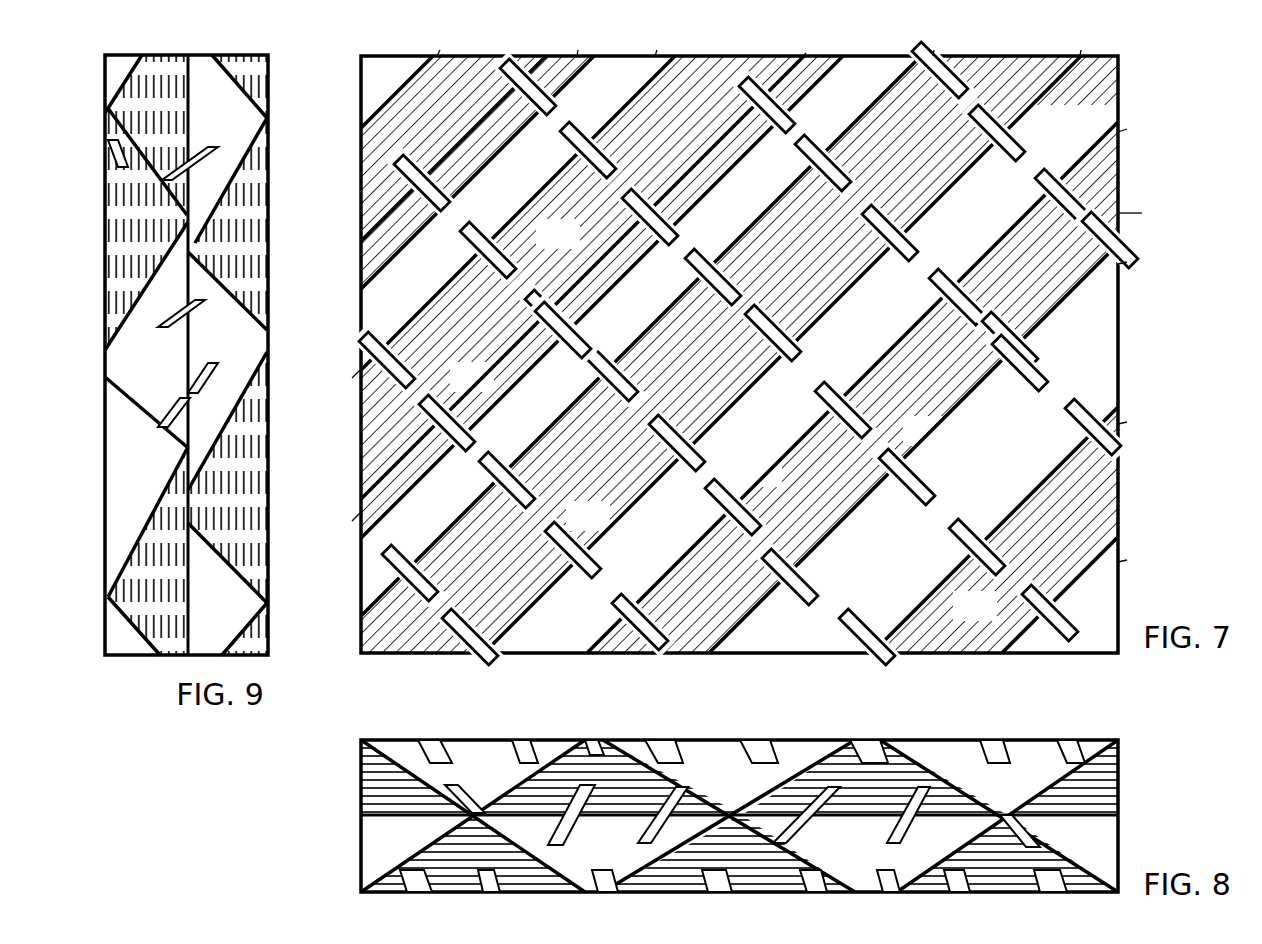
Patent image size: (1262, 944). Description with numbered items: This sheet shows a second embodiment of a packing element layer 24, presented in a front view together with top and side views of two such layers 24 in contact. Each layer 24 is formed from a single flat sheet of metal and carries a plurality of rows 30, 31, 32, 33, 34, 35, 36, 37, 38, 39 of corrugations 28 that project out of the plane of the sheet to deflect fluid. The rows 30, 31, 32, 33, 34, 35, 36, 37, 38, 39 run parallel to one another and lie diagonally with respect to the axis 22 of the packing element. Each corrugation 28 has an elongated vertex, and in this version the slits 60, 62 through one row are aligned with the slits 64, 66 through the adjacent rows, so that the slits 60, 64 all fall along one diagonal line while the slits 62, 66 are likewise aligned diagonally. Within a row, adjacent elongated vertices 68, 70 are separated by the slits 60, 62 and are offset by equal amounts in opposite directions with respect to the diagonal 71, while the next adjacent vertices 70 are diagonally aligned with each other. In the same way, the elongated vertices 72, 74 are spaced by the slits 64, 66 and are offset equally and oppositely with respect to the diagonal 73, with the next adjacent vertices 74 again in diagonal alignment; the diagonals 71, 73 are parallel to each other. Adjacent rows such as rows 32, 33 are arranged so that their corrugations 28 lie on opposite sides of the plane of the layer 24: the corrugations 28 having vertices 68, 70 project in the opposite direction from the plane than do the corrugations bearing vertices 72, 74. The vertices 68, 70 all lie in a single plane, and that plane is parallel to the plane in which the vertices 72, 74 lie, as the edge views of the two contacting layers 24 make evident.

In FIG. 7, the axis 22 is at (741, 20).
In FIG. 7, the layer 24 is at (1142, 213).
In FIG. 8, the layer 24 is at (769, 816).
In FIG. 9, the layer 24 is at (191, 340).
In FIG. 7, the corrugations 28 is at (631, 350).
In FIG. 8, the corrugations 28 is at (739, 816).
In FIG. 9, the corrugations 28 is at (186, 355).
In FIG. 7, the row 30 is at (440, 50).
In FIG. 7, the row 31 is at (578, 50).
In FIG. 7, the row 32 is at (657, 50).
In FIG. 7, the row 33 is at (806, 53).
In FIG. 7, the row 34 is at (934, 50).
In FIG. 7, the row 35 is at (1081, 50).
In FIG. 7, the row 36 is at (1127, 129).
In FIG. 7, the row 37 is at (1127, 262).
In FIG. 7, the row 38 is at (1127, 422).
In FIG. 7, the row 39 is at (1127, 560).
In FIG. 7, the slit 60 is at (761, 222).
In FIG. 8, the slit 60 is at (748, 742).
In FIG. 7, the slit 62 is at (749, 319).
In FIG. 8, the slit 62 is at (645, 742).
In FIG. 9, the slit 62 is at (105, 524).
In FIG. 7, the slit 64 is at (710, 376).
In FIG. 8, the slit 64 is at (768, 827).
In FIG. 9, the slit 64 is at (208, 486).
In FIG. 7, the slit 66 is at (778, 441).
In FIG. 8, the slit 66 is at (733, 856).
In FIG. 9, the slit 66 is at (238, 308).
In FIG. 7, the elongated vertex 68 is at (631, 350).
In FIG. 8, the elongated vertex 68 is at (808, 742).
In FIG. 9, the elongated vertex 68 is at (105, 427).
In FIG. 7, the elongated vertex 70 is at (631, 350).
In FIG. 8, the elongated vertex 70 is at (694, 742).
In FIG. 9, the elongated vertex 70 is at (105, 482).
In FIG. 7, the diagonal 71 is at (352, 378).
In FIG. 7, the elongated vertex 72 is at (516, 387).
In FIG. 8, the elongated vertex 72 is at (742, 810).
In FIG. 9, the elongated vertex 72 is at (215, 406).
In FIG. 7, the diagonal 73 is at (352, 521).
In FIG. 7, the elongated vertex 74 is at (653, 278).
In FIG. 8, the elongated vertex 74 is at (782, 816).
In FIG. 9, the elongated vertex 74 is at (146, 393).